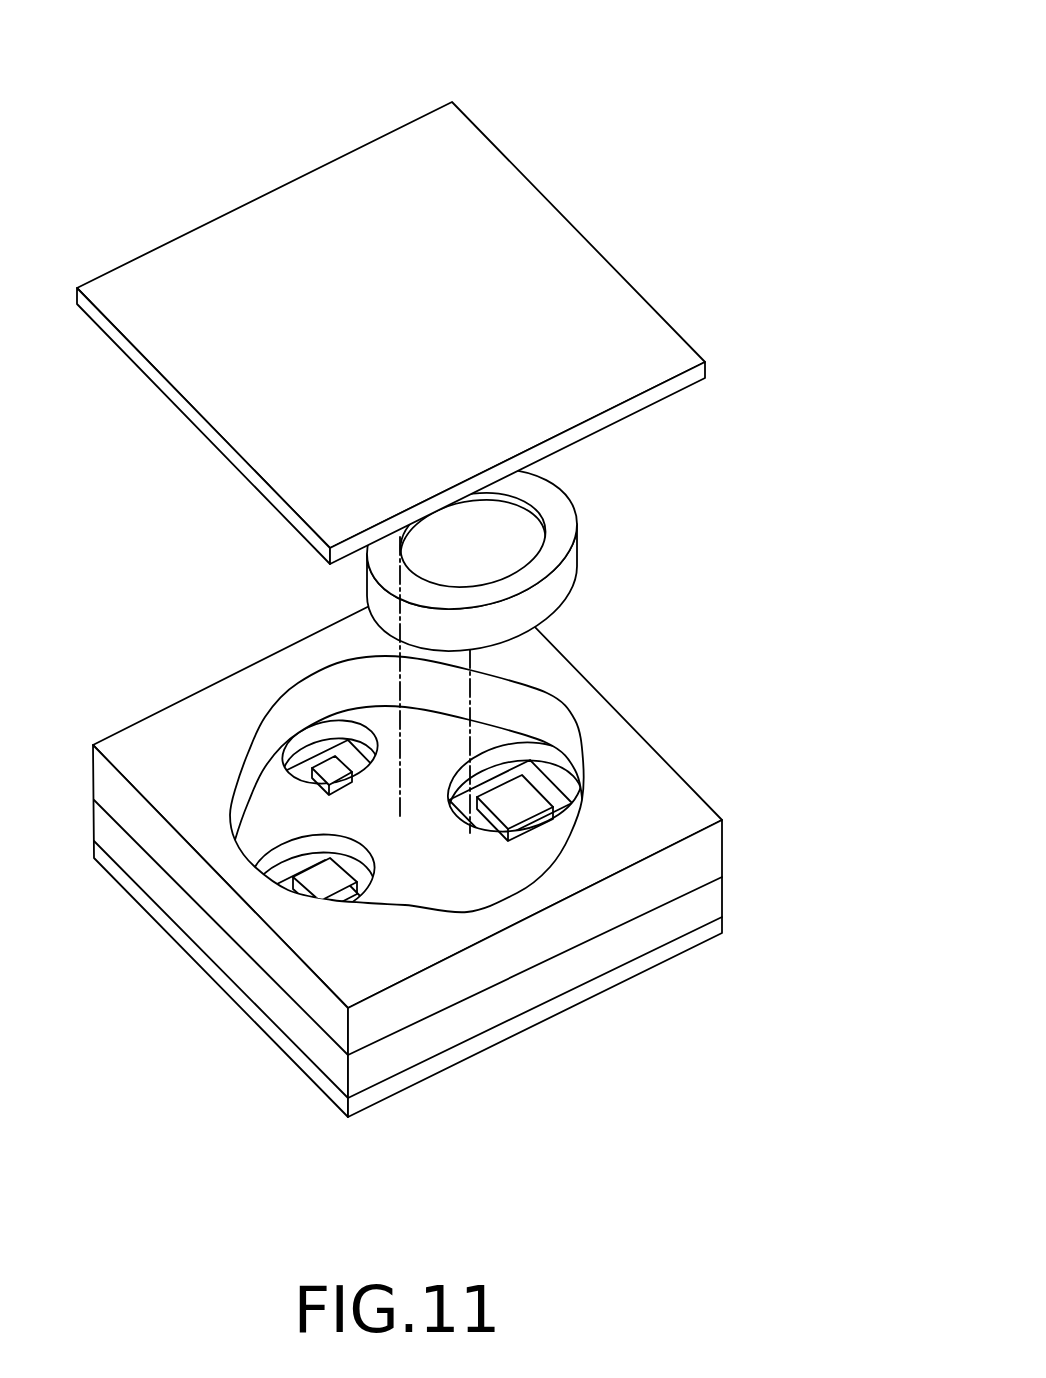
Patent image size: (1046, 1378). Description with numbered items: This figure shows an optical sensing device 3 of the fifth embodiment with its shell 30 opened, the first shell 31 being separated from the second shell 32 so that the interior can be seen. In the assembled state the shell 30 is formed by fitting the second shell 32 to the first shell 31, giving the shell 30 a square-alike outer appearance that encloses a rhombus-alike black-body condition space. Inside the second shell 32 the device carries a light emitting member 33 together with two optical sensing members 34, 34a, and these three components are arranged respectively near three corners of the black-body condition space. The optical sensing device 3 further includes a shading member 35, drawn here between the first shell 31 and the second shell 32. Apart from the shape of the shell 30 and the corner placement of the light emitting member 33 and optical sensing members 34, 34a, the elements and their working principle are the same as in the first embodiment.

The optical sensing device 3 is at (633, 137).
The shell 30 is at (725, 500).
The first shell 31 is at (633, 333).
The second shell 32 is at (643, 792).
The light emitting member 33 is at (326, 770).
The optical sensing member 34 is at (257, 783).
The optical sensing member 34a is at (512, 793).
The shading member 35 is at (556, 552).